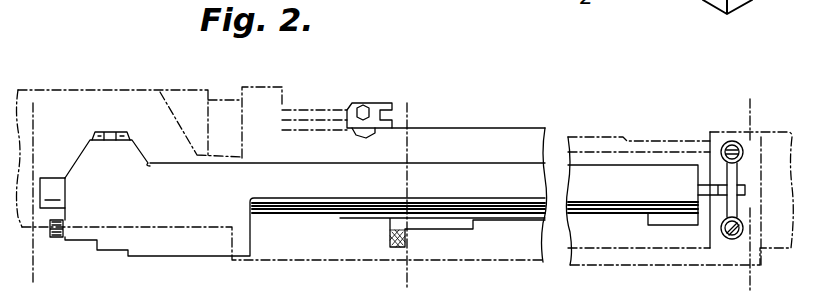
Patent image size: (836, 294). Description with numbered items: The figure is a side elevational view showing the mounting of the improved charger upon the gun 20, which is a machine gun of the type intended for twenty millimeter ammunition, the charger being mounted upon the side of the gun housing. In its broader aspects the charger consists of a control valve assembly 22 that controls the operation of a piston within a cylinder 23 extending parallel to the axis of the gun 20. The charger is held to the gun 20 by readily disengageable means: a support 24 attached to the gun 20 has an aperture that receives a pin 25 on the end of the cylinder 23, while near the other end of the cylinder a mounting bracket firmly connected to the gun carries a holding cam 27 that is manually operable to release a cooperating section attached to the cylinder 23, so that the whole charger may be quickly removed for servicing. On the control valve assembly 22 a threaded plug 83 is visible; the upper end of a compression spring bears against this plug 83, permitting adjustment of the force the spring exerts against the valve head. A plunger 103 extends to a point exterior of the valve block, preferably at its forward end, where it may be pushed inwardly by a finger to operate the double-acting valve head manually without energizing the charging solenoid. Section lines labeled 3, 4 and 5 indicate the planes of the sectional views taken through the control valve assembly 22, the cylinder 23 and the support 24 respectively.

The section line 3- 3 is at (56, 285).
The section line 4- 4 is at (430, 287).
The section line 5- 5 is at (762, 288).
The gun 20 is at (470, 128).
The control valve assembly 22 is at (252, 158).
The cylinder 23 is at (516, 140).
The support 24 is at (738, 176).
The pin 25 is at (744, 186).
The holding cam 27 is at (392, 246).
The threaded plug 83 is at (113, 133).
The plunger 103 is at (58, 238).